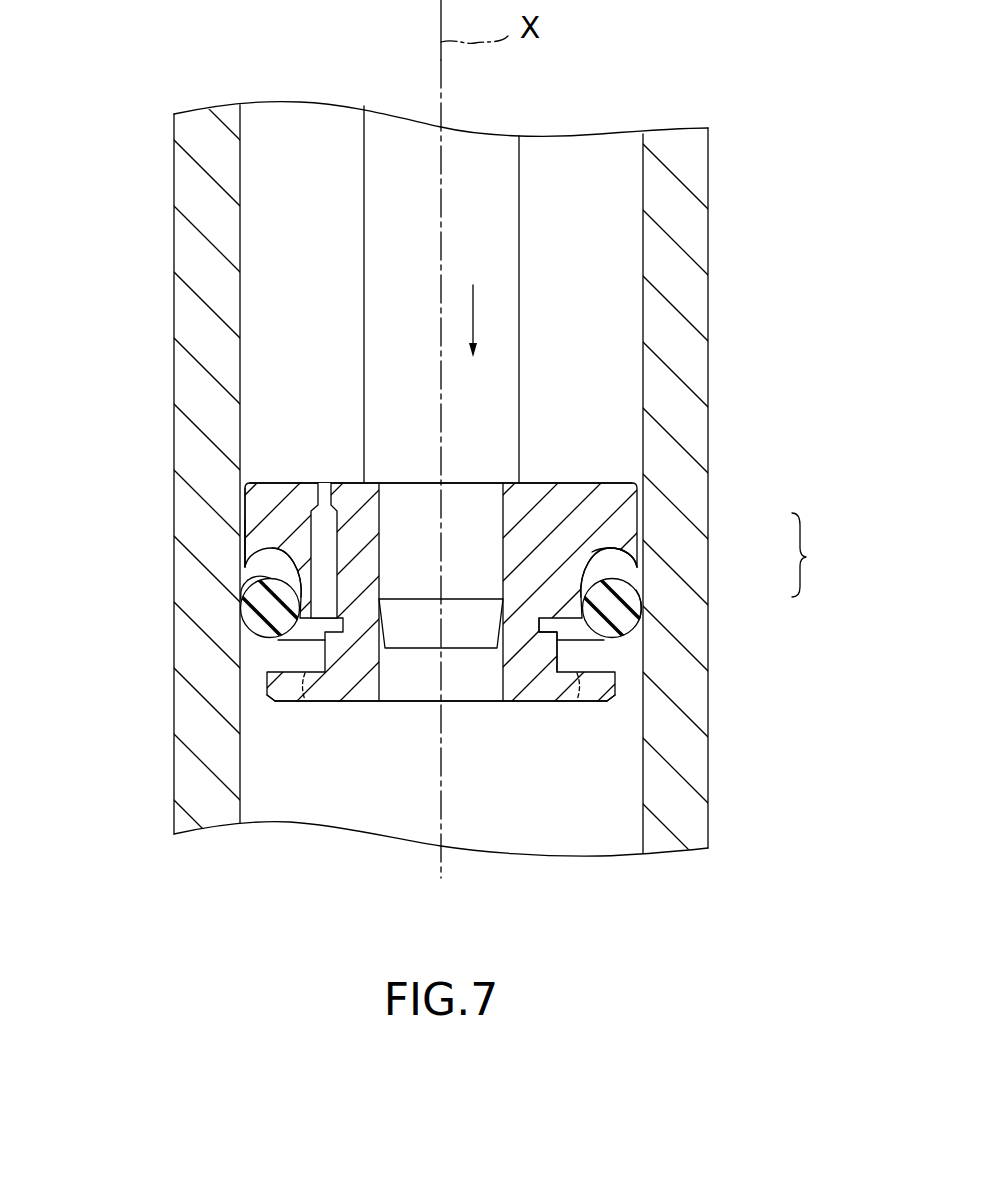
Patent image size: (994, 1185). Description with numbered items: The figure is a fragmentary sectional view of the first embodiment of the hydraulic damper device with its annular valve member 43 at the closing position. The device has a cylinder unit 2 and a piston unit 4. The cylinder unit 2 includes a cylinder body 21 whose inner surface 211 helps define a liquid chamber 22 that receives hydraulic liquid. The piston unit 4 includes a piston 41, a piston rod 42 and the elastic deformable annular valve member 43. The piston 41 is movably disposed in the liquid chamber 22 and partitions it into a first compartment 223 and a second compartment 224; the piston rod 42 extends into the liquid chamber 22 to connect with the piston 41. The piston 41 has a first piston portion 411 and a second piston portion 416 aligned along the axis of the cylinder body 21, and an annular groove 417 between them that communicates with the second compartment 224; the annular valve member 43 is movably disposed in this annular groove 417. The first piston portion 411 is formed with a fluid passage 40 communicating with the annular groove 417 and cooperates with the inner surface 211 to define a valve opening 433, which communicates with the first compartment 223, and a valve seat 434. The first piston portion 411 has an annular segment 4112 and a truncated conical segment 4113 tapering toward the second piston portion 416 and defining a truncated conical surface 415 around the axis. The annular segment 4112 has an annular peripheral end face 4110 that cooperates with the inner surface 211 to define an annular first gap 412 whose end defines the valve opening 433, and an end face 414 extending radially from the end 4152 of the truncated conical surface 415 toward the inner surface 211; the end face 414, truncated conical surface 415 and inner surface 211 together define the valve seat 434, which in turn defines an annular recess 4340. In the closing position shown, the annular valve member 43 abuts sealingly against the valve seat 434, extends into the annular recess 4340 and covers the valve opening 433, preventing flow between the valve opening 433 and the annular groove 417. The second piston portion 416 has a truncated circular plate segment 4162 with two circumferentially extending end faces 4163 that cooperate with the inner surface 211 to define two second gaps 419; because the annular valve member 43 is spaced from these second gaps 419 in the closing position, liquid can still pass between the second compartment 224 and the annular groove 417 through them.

The cylinder unit 2 is at (478, 497).
The cylinder body 21 is at (706, 505).
The inner surface 211 is at (643, 777).
The liquid chamber 22 is at (582, 305).
The first compartment 223 is at (603, 378).
The second compartment 224 is at (607, 822).
The piston unit 4 is at (479, 439).
The piston rod 42 is at (456, 172).
The fluid passage 40 is at (330, 528).
The piston 41 is at (449, 653).
The first piston portion 411 is at (719, 555).
The annular peripheral end face 4110 is at (640, 497).
The annular segment 4112 is at (617, 563).
The truncated conical segment 4113 is at (605, 552).
The annular first gap 412 is at (240, 497).
The end face 414 is at (240, 537).
The truncated conical surface 415 is at (298, 583).
The end 4152 is at (285, 574).
The second piston portion 416 is at (564, 660).
The truncated circular plate segment 4162 is at (545, 697).
The circumferentially extending end faces 4163 is at (265, 680).
The annular groove 417 is at (288, 653).
The second gaps 419 is at (257, 698).
The annular valve member 43 is at (638, 633).
The valve opening 433 is at (243, 581).
The valve seat 434 is at (247, 566).
The annular recess 4340 is at (643, 603).